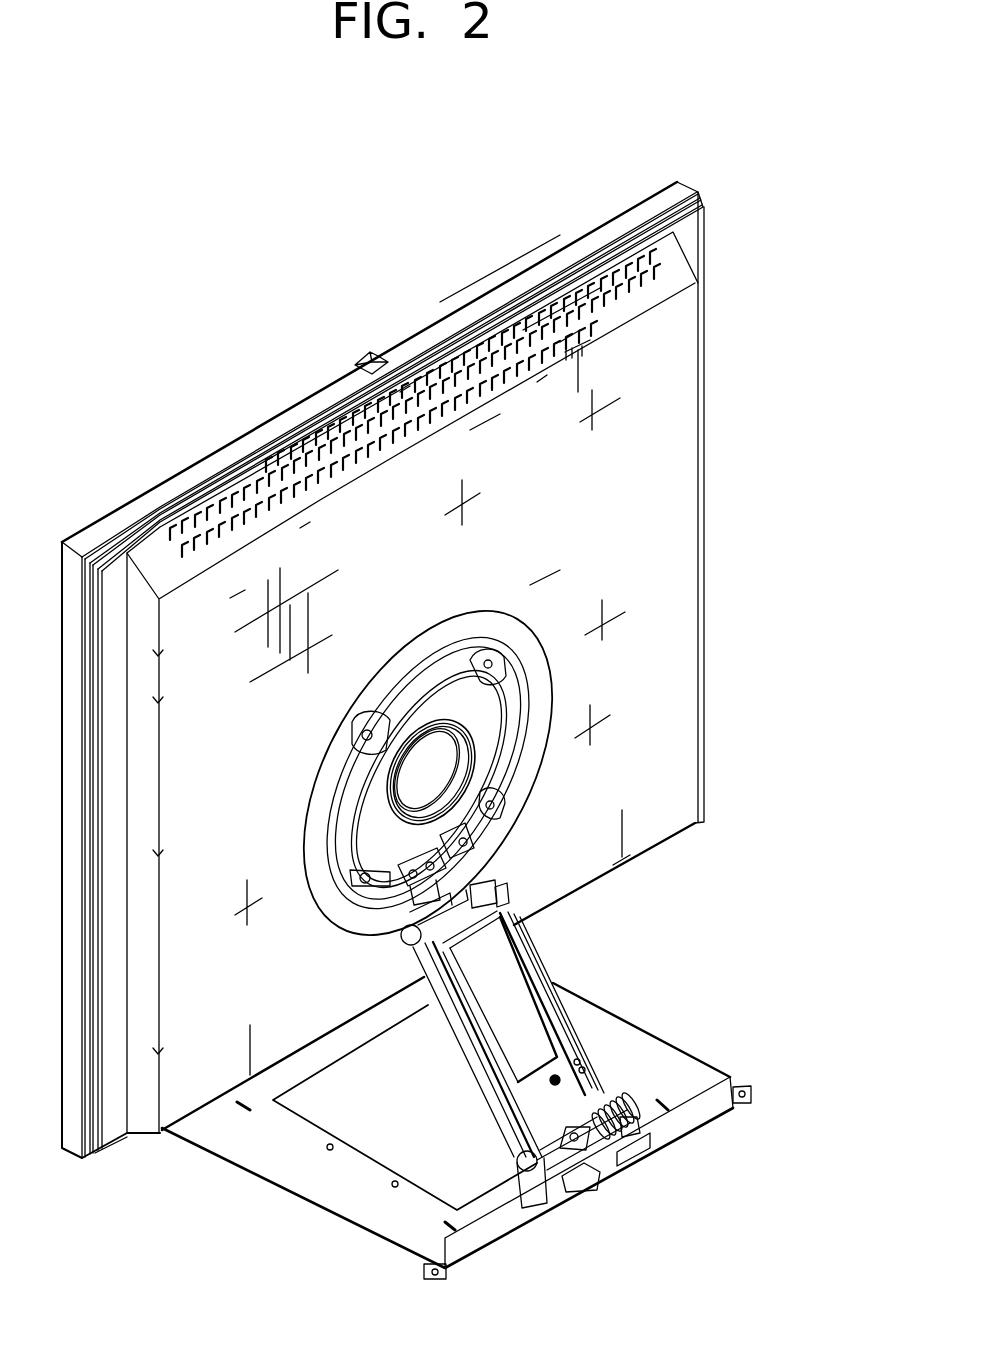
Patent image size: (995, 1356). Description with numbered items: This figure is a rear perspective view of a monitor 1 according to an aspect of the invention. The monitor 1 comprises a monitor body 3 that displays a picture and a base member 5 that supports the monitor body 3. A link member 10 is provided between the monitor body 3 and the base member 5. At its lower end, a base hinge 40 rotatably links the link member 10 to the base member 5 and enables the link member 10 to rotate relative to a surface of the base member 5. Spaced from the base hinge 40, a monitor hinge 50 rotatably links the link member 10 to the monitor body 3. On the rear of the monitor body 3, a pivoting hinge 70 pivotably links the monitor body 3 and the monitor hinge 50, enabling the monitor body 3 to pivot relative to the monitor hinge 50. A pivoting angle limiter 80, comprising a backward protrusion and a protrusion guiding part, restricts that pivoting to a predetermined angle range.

The monitor 1 is at (80, 247).
The monitor body 3 is at (683, 507).
The base member 5 is at (618, 1031).
The link member 10 is at (556, 961).
The base hinge 40 is at (630, 1089).
The monitor hinge 50 is at (503, 880).
The pivoting hinge 70 is at (566, 683).
The pivoting angle limiter 80 is at (568, 1176).